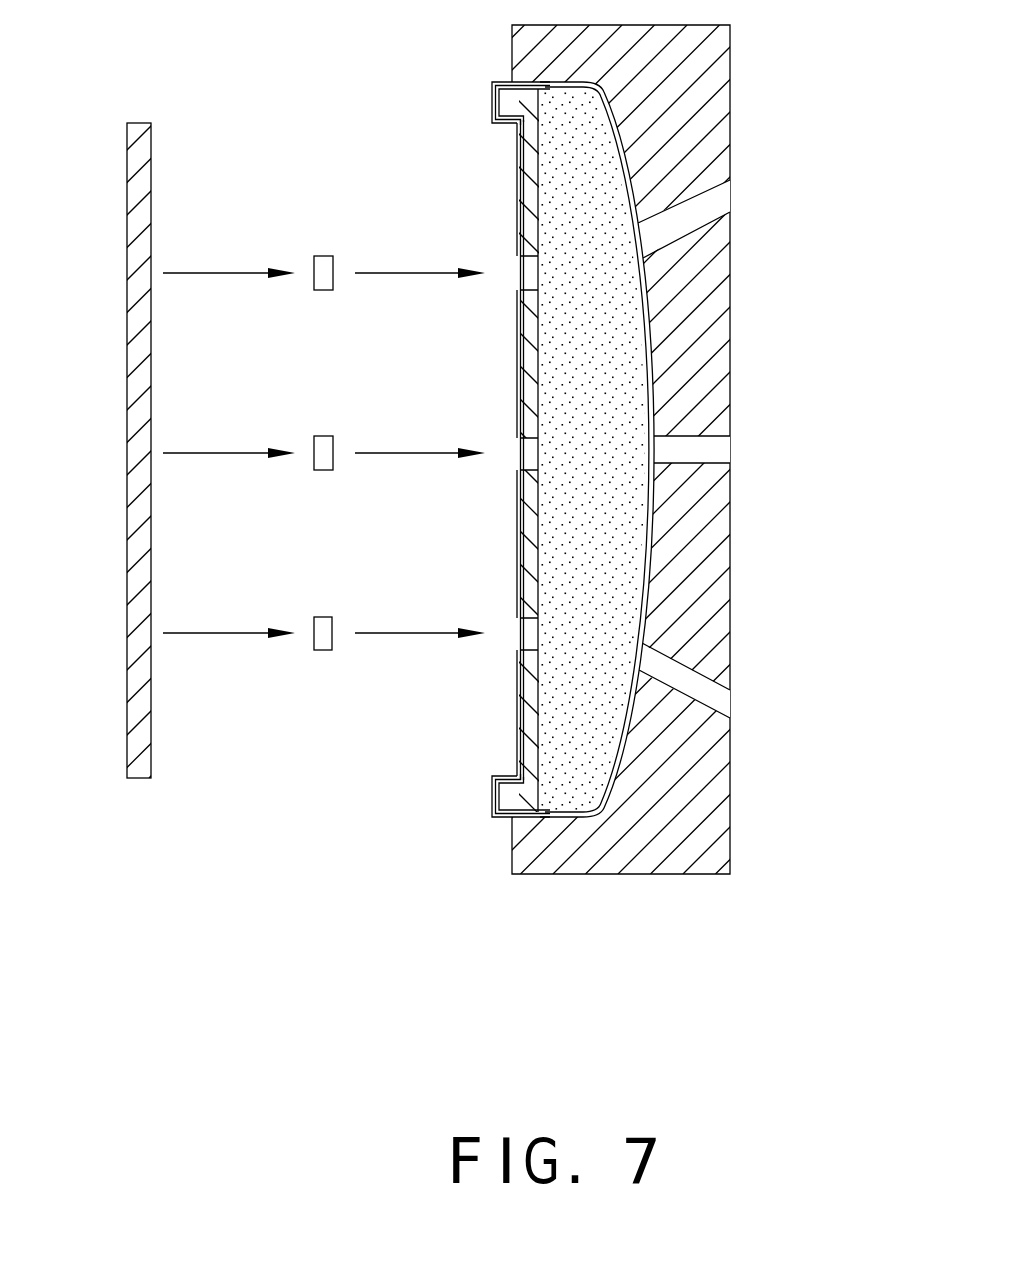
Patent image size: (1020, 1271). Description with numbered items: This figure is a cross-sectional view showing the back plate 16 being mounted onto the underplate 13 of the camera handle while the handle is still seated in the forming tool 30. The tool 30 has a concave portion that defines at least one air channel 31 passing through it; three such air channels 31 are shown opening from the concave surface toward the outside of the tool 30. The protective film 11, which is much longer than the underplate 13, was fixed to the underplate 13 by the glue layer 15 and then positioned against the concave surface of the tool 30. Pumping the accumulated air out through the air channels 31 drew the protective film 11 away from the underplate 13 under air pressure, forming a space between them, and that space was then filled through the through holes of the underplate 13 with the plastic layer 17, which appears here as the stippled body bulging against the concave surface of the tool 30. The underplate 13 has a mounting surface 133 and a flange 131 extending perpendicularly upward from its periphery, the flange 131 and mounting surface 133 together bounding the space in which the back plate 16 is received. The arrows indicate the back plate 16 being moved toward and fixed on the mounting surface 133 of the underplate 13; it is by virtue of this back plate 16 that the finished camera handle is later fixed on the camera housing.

The protective film 11 is at (611, 775).
The underplate 13 is at (520, 703).
The flange 131 is at (507, 793).
The mounting surface 133 is at (520, 217).
The glue layer 15 is at (512, 82).
The back plate 16 is at (136, 683).
The plastic layer 17 is at (322, 651).
The tool 30 is at (720, 822).
The air channel 31 is at (712, 203).